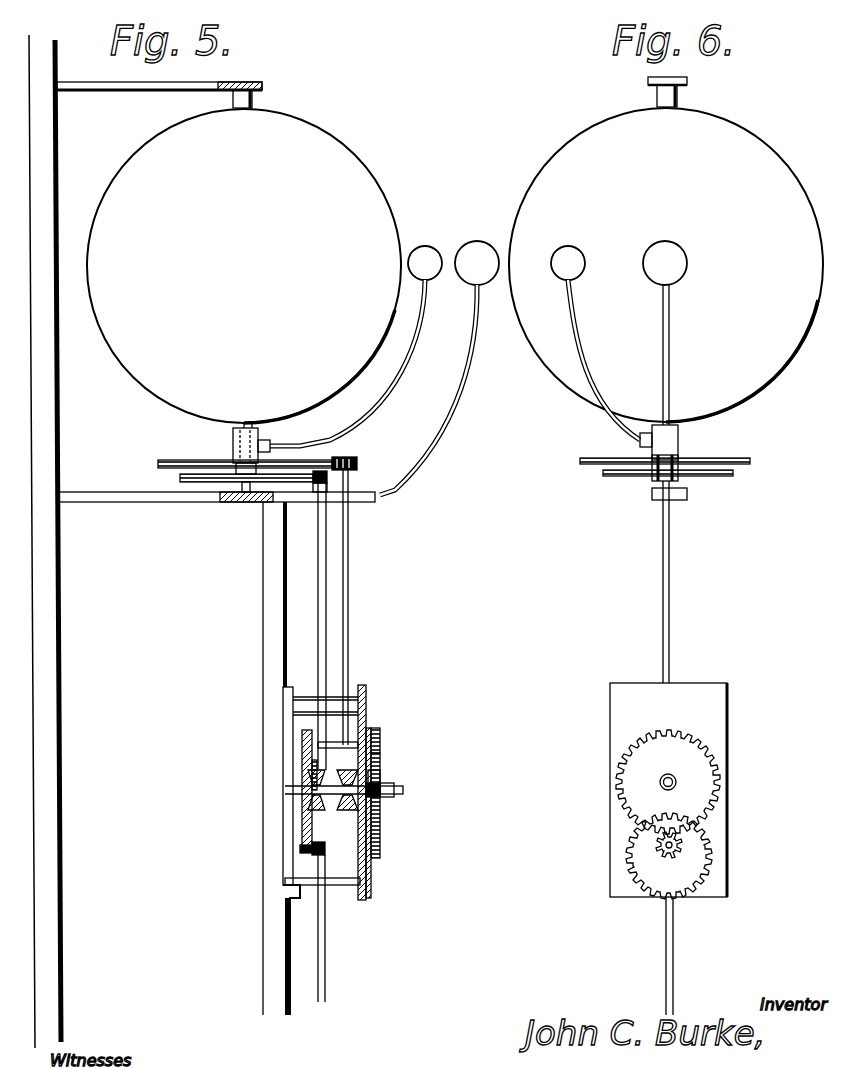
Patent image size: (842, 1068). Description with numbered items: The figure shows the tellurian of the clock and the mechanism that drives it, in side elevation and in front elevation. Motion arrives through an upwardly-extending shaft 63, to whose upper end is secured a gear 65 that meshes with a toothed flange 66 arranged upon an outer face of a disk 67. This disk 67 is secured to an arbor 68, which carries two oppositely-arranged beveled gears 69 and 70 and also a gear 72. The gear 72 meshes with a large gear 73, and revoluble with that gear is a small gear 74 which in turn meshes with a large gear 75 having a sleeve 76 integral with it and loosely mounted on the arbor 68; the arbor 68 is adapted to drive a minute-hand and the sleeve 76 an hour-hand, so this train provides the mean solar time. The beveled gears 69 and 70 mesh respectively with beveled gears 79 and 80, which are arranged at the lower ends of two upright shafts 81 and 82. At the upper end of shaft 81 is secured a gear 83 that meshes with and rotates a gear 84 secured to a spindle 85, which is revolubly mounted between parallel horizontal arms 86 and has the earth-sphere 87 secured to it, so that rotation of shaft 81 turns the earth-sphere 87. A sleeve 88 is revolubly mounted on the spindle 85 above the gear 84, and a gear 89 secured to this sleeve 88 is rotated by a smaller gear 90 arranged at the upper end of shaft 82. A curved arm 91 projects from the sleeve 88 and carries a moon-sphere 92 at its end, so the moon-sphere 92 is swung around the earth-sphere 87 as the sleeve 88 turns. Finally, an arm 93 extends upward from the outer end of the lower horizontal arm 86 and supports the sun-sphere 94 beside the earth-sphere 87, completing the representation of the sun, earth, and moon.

In FIG. 5, the shaft 63 is at (326, 955).
In FIG. 6, the shaft 63 is at (676, 950).
In FIG. 5, the gear 65 is at (314, 855).
In FIG. 5, the toothed flange 66 is at (322, 832).
In FIG. 5, the disk 67 is at (302, 848).
In FIG. 5, the arbor 68 is at (302, 795).
In FIG. 6, the arbor 68 is at (676, 782).
In FIG. 5, the beveled gear 69 is at (310, 783).
In FIG. 5, the beveled gear 70 is at (378, 778).
In FIG. 5, the gear 72 is at (382, 790).
In FIG. 5, the large gear 73 is at (371, 880).
In FIG. 6, the large gear 73 is at (700, 860).
In FIG. 5, the small gear 74 is at (380, 852).
In FIG. 6, the small gear 74 is at (674, 845).
In FIG. 5, the large gear 75 is at (387, 815).
In FIG. 6, the large gear 75 is at (669, 750).
In FIG. 5, the sleeve 76 is at (400, 800).
In FIG. 6, the sleeve 76 is at (676, 779).
In FIG. 5, the beveled gear 79 is at (365, 728).
In FIG. 5, the beveled gear 80 is at (374, 748).
In FIG. 5, the shaft 81 is at (318, 630).
In FIG. 5, the shaft 82 is at (349, 592).
In FIG. 6, the shaft 82 is at (672, 584).
In FIG. 5, the gear 83 is at (327, 483).
In FIG. 6, the gear 83 is at (688, 496).
In FIG. 5, the gear 84 is at (200, 484).
In FIG. 6, the gear 84 is at (716, 474).
In FIG. 5, the spindle 85 is at (243, 490).
In FIG. 5, the horizontal arms 86 is at (194, 86).
In FIG. 6, the horizontal arms 86 is at (688, 80).
In FIG. 5, the earth-sphere 87 is at (318, 134).
In FIG. 6, the earth-sphere 87 is at (748, 146).
In FIG. 5, the sleeve 88 is at (233, 440).
In FIG. 6, the sleeve 88 is at (679, 443).
In FIG. 5, the gear 89 is at (158, 463).
In FIG. 6, the gear 89 is at (590, 462).
In FIG. 5, the smaller gear 90 is at (350, 458).
In FIG. 6, the smaller gear 90 is at (655, 468).
In FIG. 5, the curved arm 91 is at (413, 345).
In FIG. 6, the curved arm 91 is at (590, 393).
In FIG. 5, the moon-sphere 92 is at (427, 253).
In FIG. 6, the moon-sphere 92 is at (558, 270).
In FIG. 5, the arm 93 is at (462, 392).
In FIG. 6, the arm 93 is at (670, 400).
In FIG. 5, the sun-sphere 94 is at (480, 238).
In FIG. 6, the sun-sphere 94 is at (665, 263).